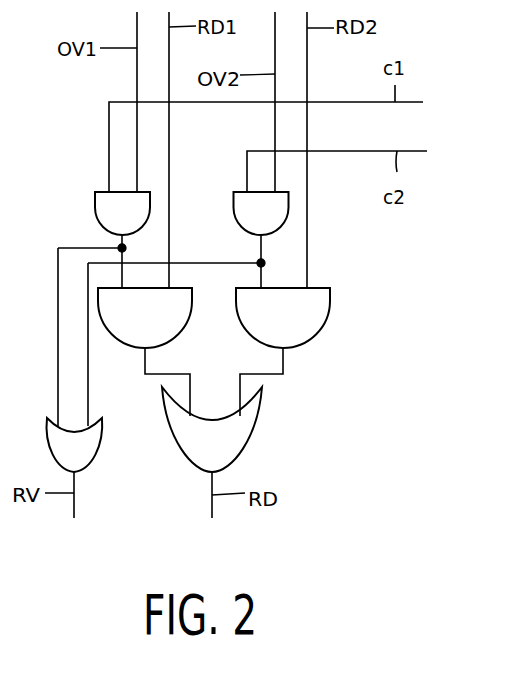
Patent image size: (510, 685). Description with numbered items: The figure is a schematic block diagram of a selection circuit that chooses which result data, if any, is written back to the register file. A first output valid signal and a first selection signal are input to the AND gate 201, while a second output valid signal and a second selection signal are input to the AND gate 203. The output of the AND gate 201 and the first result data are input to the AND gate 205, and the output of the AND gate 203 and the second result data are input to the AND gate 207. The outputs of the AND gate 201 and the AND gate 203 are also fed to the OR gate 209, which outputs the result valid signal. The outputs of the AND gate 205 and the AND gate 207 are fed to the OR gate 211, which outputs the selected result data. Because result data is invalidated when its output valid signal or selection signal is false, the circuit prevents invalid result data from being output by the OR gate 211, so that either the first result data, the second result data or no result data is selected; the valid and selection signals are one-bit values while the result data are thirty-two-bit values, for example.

The AND gate 201 is at (122, 213).
The AND gate 203 is at (261, 213).
The AND gate 205 is at (145, 318).
The AND gate 207 is at (283, 318).
The OR gate 209 is at (75, 445).
The OR gate 211 is at (212, 429).